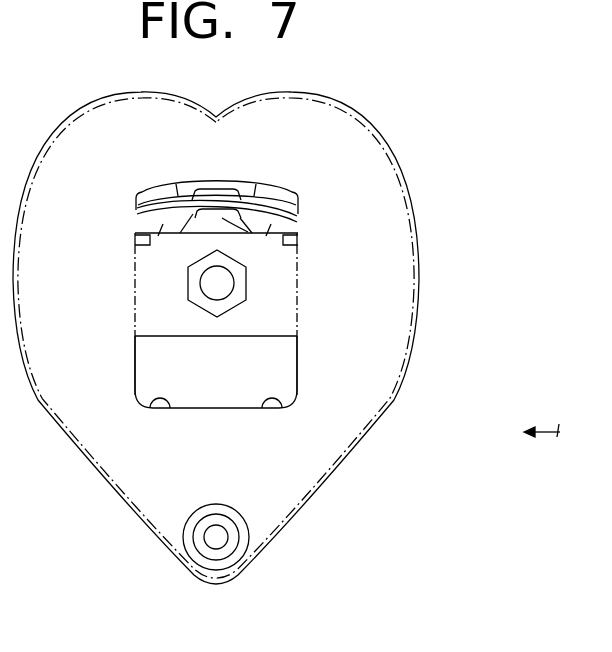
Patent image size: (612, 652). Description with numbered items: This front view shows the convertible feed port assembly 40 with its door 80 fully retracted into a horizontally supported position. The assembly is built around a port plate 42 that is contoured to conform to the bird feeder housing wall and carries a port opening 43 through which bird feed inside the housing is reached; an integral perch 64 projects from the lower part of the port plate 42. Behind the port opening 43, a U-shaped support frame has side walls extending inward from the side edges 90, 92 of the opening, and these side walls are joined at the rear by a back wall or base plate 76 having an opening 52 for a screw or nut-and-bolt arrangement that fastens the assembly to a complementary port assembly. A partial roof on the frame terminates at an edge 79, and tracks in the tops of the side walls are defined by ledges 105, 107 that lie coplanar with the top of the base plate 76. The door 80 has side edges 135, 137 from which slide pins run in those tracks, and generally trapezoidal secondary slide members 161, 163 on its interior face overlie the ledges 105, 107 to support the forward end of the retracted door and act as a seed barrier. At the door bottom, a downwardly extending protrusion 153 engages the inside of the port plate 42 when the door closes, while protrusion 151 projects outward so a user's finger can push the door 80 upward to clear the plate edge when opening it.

The convertible feed port assembly 40 is at (546, 418).
The port plate 42 is at (395, 163).
The port opening 43 is at (276, 369).
The opening 52 is at (205, 282).
The perch 64 is at (209, 539).
The back wall or base plate 76 is at (272, 326).
The roof edge 79 is at (158, 186).
The door 80 is at (147, 214).
The side edge of port opening 90 is at (298, 352).
The side edge of port opening 92 is at (135, 362).
The ledge 105 is at (300, 231).
The ledge 107 is at (138, 231).
The door side edge 135 is at (136, 222).
The door side edge 137 is at (298, 207).
The protrusion 151 is at (222, 188).
The downwardly extending protrusion 153 is at (300, 220).
The secondary slide member 161 is at (164, 238).
The secondary slide member 163 is at (270, 238).